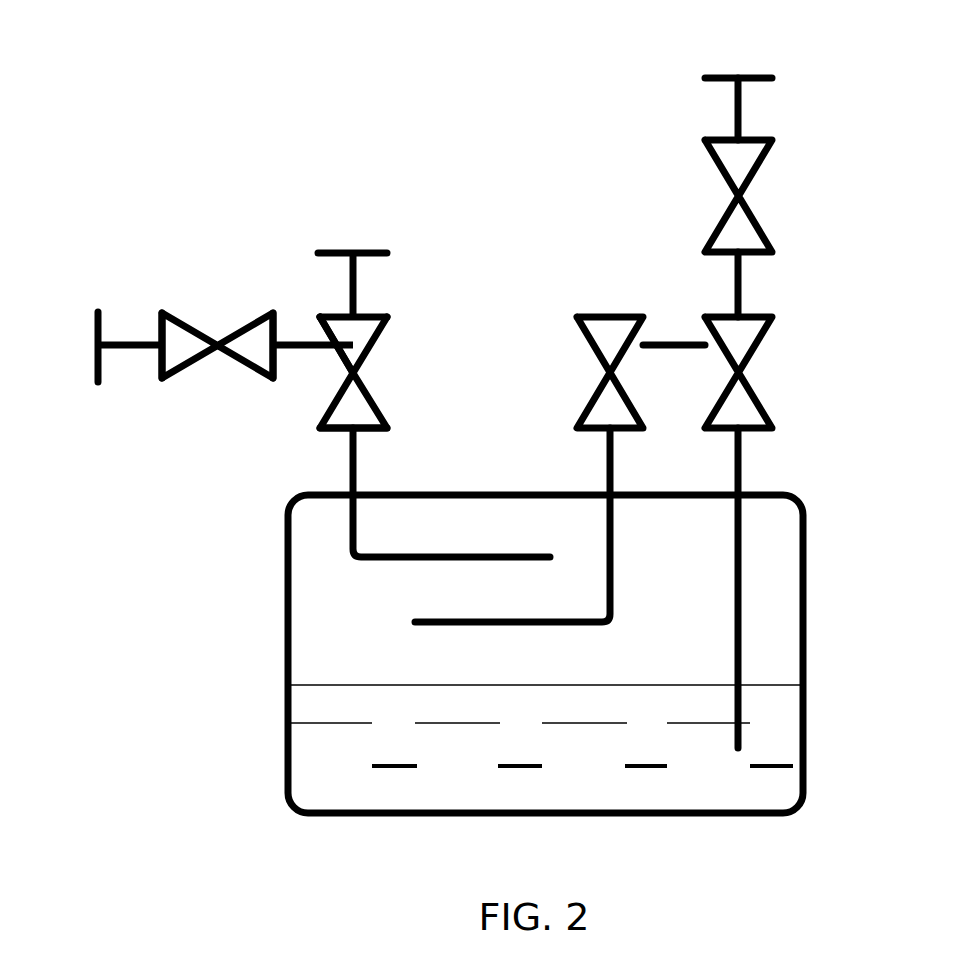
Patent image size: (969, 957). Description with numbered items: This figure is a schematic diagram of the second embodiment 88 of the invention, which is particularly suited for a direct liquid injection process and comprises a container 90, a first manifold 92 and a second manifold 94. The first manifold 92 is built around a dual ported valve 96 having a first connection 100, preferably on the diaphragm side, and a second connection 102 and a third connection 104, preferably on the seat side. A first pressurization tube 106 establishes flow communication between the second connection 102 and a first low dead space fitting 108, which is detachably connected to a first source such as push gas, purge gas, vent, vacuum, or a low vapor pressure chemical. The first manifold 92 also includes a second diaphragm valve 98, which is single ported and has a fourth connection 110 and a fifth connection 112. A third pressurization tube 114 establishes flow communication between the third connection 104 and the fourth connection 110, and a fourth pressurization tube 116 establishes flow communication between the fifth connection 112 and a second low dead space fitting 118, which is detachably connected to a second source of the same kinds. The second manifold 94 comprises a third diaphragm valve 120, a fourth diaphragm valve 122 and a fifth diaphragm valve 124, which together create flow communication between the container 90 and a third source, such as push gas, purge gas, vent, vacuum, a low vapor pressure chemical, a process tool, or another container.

The second embodiment 88 is at (548, 73).
The container 90 is at (474, 654).
The first manifold 92 is at (269, 286).
The second manifold 94 is at (708, 225).
The dual ported valve 96 is at (389, 375).
The second diaphragm valve 98 is at (176, 357).
The first connection 100 is at (372, 432).
The second connection 102 is at (360, 313).
The third connection 104 is at (340, 360).
The first pressurization tube 106 is at (356, 268).
The first low dead space fitting 108 is at (326, 227).
The fourth connection 110 is at (283, 335).
The fifth connection 112 is at (116, 307).
The third pressurization tube 114 is at (287, 289).
The fourth pressurization tube 116 is at (96, 388).
The second low dead space fitting 118 is at (95, 337).
The third diaphragm valve 120 is at (790, 372).
The fourth diaphragm valve 122 is at (795, 196).
The fifth diaphragm valve 124 is at (572, 372).